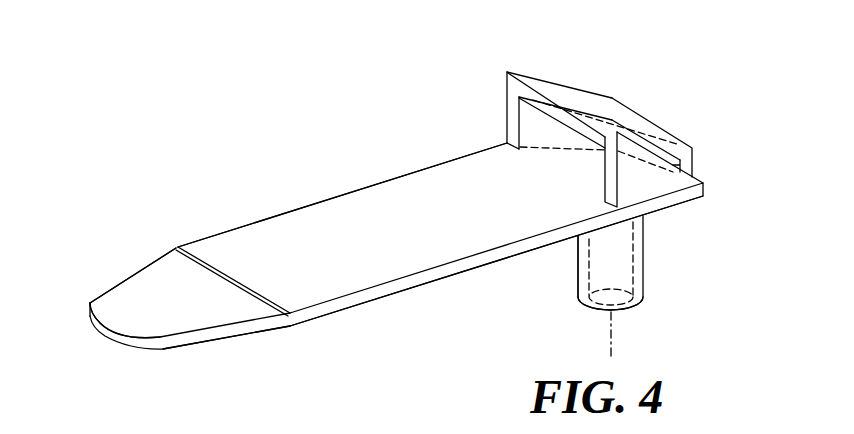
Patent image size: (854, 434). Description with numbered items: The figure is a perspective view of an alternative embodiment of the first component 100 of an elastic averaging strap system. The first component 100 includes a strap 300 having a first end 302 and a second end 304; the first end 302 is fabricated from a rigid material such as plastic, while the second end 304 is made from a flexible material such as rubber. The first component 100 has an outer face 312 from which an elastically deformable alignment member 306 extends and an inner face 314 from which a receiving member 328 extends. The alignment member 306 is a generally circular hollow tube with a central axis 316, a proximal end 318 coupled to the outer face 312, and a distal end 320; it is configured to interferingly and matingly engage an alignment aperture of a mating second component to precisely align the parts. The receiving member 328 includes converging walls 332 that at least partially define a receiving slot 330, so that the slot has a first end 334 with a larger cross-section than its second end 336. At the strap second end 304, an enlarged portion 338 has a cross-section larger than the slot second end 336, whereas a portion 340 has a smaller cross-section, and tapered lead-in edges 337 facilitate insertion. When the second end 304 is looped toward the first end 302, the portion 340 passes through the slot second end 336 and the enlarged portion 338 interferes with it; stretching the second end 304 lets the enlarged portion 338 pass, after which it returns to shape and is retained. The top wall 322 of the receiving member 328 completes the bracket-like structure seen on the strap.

The first component 100 is at (147, 80).
The strap 300 is at (367, 178).
The first end 302 is at (595, 134).
The second end 304 is at (96, 275).
The elastically deformable alignment member 306 is at (645, 262).
The outer face 312 is at (377, 306).
The inner face 314 is at (423, 187).
The central axis 316 is at (614, 337).
The proximal end 318 is at (567, 248).
The distal end 320 is at (569, 309).
The top wall of bracket 322 is at (507, 100).
The receiving member 328 is at (530, 68).
The receiving slot 330 is at (574, 164).
The converging walls 332 is at (581, 104).
The first end of receiving slot 334 is at (536, 148).
The second end of receiving slot 336 is at (652, 136).
The tapered lead-in edges 337 is at (134, 268).
The enlarged portion 338 is at (230, 246).
The portion of second end 340 is at (89, 303).